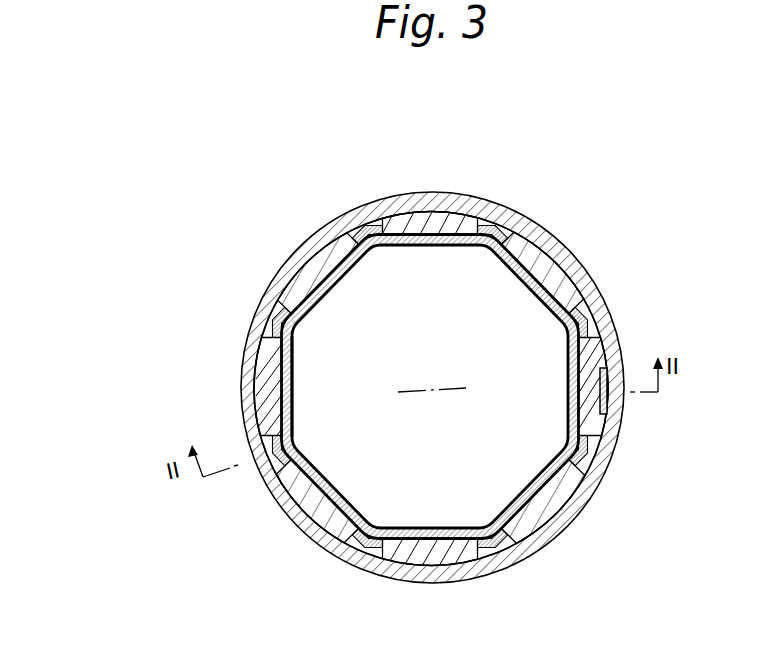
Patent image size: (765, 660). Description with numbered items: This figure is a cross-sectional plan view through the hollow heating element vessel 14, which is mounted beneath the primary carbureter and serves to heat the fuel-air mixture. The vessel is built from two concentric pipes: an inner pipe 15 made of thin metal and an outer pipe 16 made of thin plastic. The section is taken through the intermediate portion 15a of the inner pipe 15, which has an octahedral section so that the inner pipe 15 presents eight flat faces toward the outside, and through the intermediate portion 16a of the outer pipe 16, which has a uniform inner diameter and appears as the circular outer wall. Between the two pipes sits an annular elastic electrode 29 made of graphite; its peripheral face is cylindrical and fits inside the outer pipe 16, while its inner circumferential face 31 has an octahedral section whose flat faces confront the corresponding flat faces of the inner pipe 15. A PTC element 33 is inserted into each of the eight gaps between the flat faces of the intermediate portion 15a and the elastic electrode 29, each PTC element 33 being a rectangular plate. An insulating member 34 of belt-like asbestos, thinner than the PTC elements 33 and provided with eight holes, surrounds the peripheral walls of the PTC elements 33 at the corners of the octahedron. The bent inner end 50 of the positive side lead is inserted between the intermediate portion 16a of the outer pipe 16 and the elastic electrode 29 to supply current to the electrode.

The hollow heating element vessel 14 is at (424, 387).
The inner pipe 15 is at (302, 409).
The intermediate portion 15a is at (298, 366).
The outer pipe 16 is at (278, 258).
The intermediate portion 16a is at (270, 300).
The elastic electrode 29 is at (527, 243).
The inner circumferential face 31 is at (540, 552).
The PTC element 33 is at (277, 385).
The insulating member 34 is at (284, 330).
The inner end of the positive side lead 50 is at (621, 372).